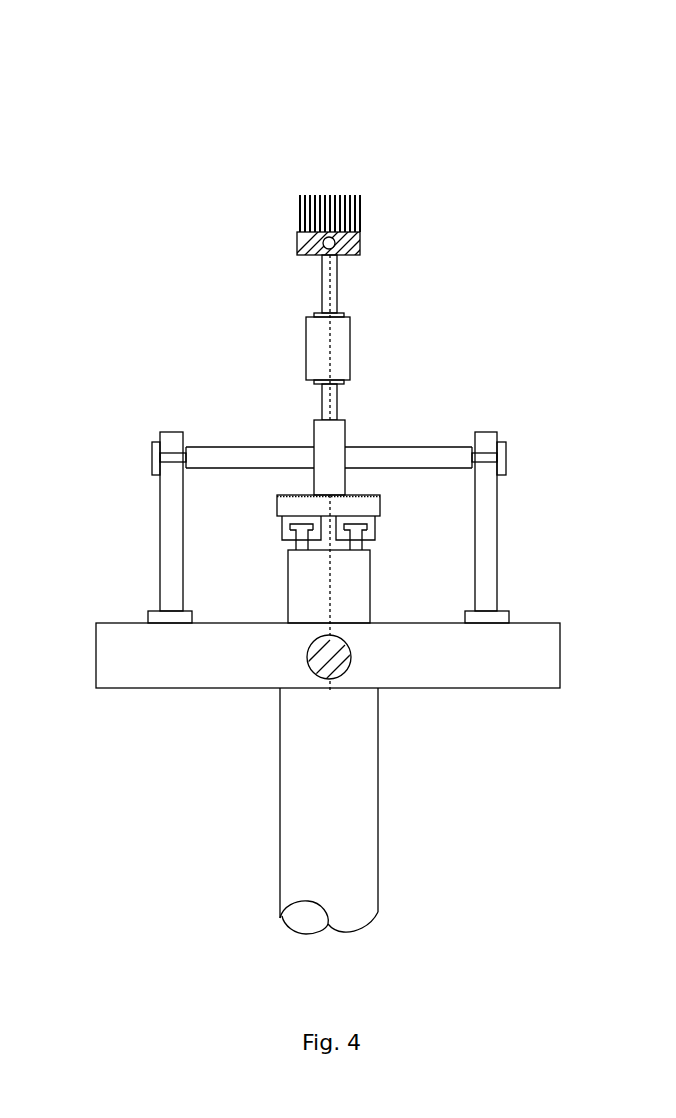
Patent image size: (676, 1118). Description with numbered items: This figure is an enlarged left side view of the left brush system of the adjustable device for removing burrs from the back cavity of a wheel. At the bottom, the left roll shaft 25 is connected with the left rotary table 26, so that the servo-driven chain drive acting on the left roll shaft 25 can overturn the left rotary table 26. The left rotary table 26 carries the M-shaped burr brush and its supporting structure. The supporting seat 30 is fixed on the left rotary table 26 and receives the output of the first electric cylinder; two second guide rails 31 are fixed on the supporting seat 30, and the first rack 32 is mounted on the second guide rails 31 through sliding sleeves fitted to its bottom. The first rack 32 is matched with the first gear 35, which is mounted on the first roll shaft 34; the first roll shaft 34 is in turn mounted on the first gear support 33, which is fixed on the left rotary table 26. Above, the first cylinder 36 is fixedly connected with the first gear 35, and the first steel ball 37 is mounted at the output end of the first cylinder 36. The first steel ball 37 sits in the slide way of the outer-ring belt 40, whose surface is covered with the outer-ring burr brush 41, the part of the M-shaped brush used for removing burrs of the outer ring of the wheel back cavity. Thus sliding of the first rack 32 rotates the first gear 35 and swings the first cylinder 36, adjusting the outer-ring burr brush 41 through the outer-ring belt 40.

The left roll shaft 25 is at (305, 657).
The left rotary table 26 is at (418, 640).
The supporting seat 30 is at (357, 590).
The second guide rails 31 is at (365, 530).
The first rack 32 is at (345, 495).
The first gear support 33 is at (160, 500).
The first roll shaft 34 is at (250, 455).
The first gear 35 is at (340, 425).
The first cylinder 36 is at (340, 350).
The first steel ball 37 is at (300, 230).
The outer-ring belt 40 is at (350, 238).
The outer-ring burr brush 41 is at (355, 195).